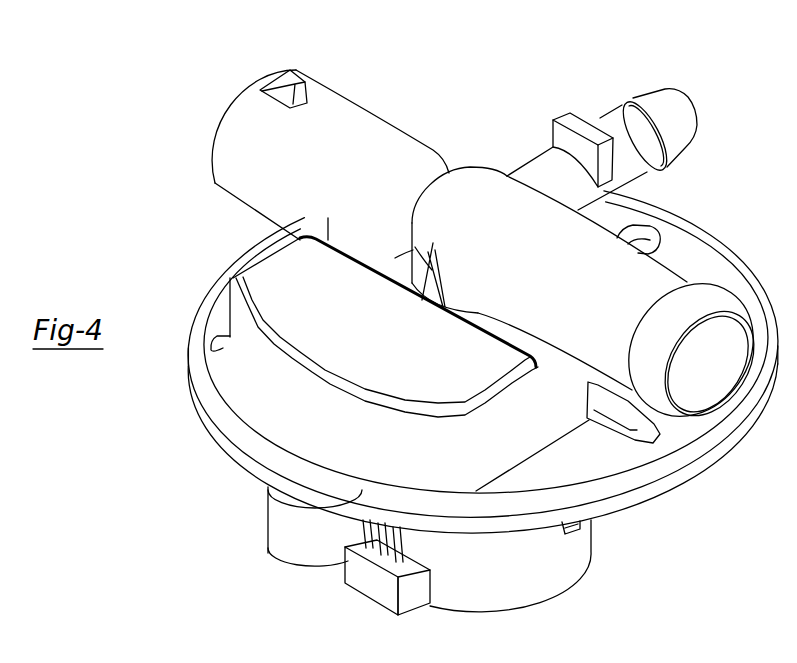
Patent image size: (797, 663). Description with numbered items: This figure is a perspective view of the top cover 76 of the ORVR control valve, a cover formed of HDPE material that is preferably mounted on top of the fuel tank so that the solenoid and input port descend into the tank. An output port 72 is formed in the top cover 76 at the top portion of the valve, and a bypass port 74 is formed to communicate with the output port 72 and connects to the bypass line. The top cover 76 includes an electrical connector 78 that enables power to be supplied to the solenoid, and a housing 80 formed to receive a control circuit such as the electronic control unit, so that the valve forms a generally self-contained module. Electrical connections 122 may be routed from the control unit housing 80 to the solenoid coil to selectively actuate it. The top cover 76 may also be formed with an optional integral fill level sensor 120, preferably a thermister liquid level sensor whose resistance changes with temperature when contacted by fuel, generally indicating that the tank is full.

The output port 72 is at (667, 277).
The bypass port 74 is at (527, 163).
The top cover 76 is at (160, 283).
The electrical connector 78 is at (353, 120).
The housing 80 is at (279, 282).
The fill level sensor 120 is at (270, 513).
The electrical connections 122 is at (367, 573).